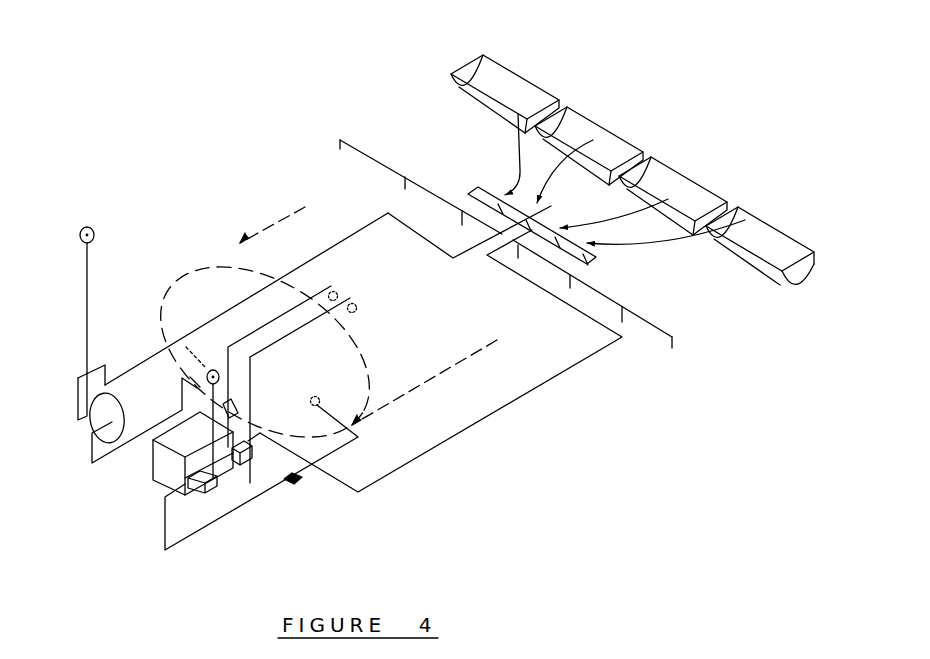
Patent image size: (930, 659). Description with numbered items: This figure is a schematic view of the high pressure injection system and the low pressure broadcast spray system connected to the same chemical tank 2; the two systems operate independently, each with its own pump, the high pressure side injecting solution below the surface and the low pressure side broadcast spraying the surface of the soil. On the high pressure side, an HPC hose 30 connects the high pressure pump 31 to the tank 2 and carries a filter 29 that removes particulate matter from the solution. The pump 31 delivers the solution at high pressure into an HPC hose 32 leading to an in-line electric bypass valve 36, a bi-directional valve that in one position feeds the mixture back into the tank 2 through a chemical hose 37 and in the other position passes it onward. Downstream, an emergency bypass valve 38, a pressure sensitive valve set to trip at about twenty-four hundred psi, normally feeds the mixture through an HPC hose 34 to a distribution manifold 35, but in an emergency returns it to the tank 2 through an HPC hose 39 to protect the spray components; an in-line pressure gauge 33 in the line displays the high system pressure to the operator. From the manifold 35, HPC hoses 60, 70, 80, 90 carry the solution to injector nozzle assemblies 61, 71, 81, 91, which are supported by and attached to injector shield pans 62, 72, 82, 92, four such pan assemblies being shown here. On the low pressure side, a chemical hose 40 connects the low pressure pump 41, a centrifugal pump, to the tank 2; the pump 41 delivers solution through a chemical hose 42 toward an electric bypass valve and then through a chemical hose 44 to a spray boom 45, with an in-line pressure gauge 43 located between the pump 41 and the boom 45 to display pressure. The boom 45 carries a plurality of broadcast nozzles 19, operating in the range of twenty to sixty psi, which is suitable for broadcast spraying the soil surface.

The chemical tank 2 is at (243, 244).
The broadcast nozzles 19 is at (399, 181).
The filter 29 is at (291, 484).
The HPC hose 30 is at (228, 514).
The high pressure pump 31 is at (150, 484).
The HPC hose 32 is at (199, 487).
The in-line pressure gauge 33 is at (214, 370).
The HPC hose 34 is at (527, 397).
The distribution manifold 35 is at (593, 259).
The in-line electric bypass valve 36 is at (240, 407).
The chemical hose 37 is at (264, 326).
The emergency bypass valve 38 is at (250, 465).
The HPC hose 39 is at (272, 346).
The chemical hose 40 is at (89, 455).
The low pressure pump 41 is at (119, 414).
The chemical hose 42 is at (84, 392).
The in-line pressure gauge 43 is at (78, 237).
The chemical hose 44 is at (343, 241).
The spray boom 45 is at (422, 180).
The HPC hose 60 is at (658, 248).
The injector nozzle assembly 61 is at (746, 226).
The injector shield pan 62 is at (790, 233).
The HPC hose 70 is at (609, 217).
The injector nozzle assembly 71 is at (669, 180).
The injector shield pan 72 is at (708, 187).
The HPC hose 80 is at (548, 190).
The injector nozzle assembly 81 is at (577, 122).
The injector shield pan 82 is at (618, 131).
The HPC hose 90 is at (517, 153).
The injector nozzle assembly 91 is at (489, 70).
The injector shield pan 92 is at (531, 77).